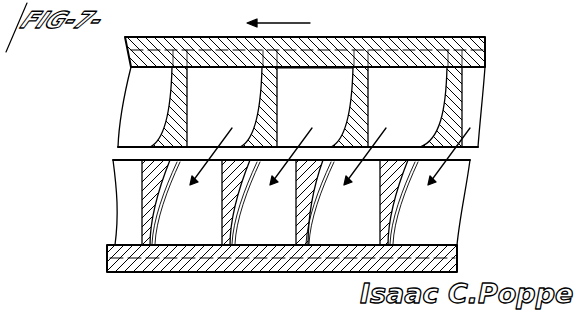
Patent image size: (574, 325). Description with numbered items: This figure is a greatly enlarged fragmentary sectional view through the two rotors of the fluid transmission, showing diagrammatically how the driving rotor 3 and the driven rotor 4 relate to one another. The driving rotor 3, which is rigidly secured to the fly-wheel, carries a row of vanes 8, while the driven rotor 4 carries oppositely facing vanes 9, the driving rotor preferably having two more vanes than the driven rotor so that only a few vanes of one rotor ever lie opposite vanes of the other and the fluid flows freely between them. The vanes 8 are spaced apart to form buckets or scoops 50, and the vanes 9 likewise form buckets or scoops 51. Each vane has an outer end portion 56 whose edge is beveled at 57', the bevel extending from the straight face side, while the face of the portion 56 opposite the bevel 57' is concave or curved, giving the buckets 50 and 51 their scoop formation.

The driving rotor 3 is at (478, 40).
The driven rotor 4 is at (127, 266).
The vane 8 is at (453, 92).
The vane 9 is at (142, 218).
The bucket 50 is at (390, 78).
The bucket 51 is at (270, 228).
The outer end portion 56 is at (355, 87).
The bevel 57' is at (290, 156).